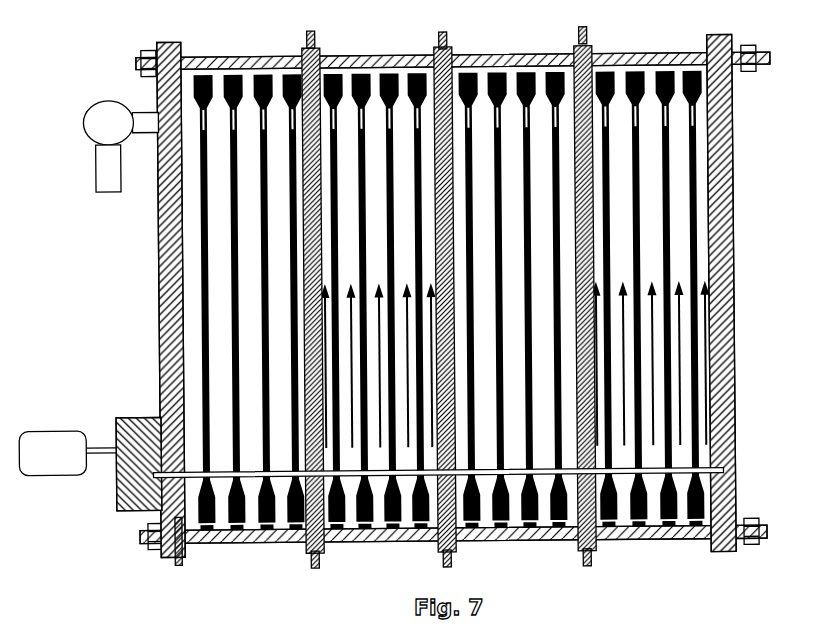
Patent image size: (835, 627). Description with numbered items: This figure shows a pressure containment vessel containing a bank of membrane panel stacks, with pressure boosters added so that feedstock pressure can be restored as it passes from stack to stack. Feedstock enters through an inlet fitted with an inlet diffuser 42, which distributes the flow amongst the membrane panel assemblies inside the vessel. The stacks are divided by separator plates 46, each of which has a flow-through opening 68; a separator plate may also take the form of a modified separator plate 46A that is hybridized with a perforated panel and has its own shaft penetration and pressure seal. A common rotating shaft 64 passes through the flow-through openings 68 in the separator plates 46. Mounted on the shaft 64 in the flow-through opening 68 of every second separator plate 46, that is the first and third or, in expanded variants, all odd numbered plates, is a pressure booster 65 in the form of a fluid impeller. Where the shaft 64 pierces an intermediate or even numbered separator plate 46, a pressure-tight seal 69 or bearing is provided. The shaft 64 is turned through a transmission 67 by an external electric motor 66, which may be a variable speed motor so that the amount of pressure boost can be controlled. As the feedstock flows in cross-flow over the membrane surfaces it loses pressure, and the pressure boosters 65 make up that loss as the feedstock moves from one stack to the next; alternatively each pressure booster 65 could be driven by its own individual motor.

The inlet diffuser 42 is at (95, 110).
The separator plate 46 is at (303, 110).
The modified separator plate 46A is at (437, 108).
The rotating shaft 64 is at (208, 480).
The pressure booster 65 is at (343, 515).
The electric motor 66 is at (52, 427).
The transmission 67 is at (125, 415).
The flow-through opening 68 is at (448, 120).
The seal 69 is at (160, 410).